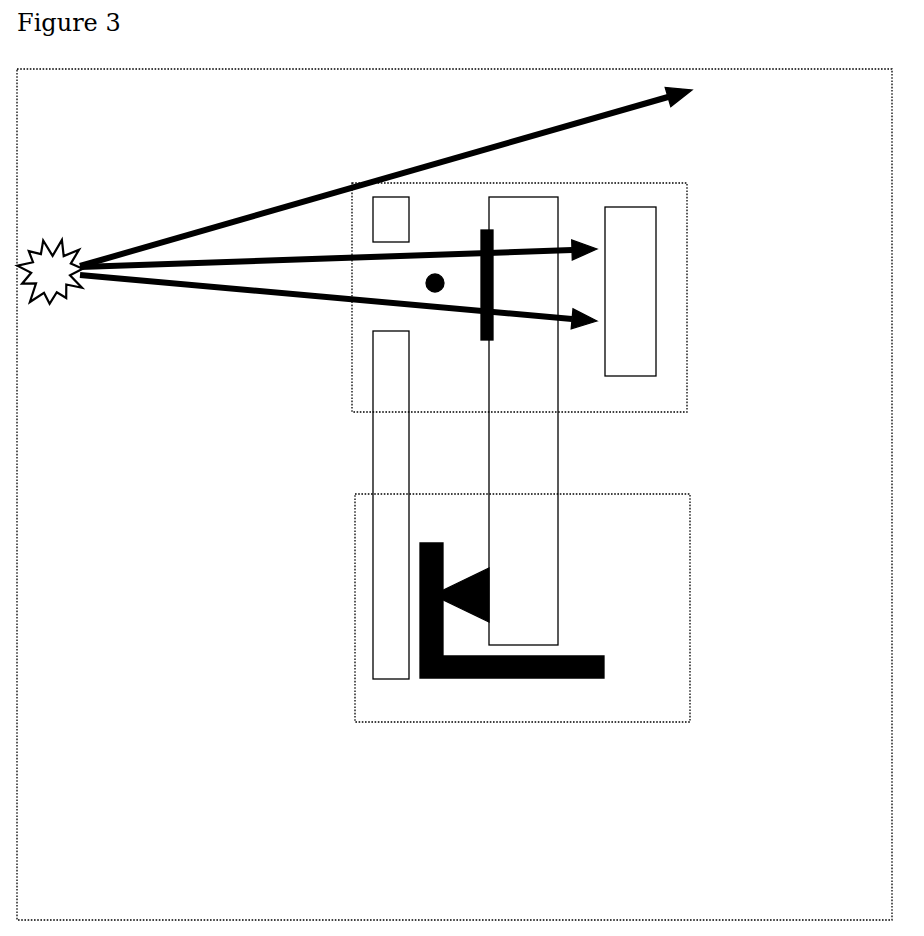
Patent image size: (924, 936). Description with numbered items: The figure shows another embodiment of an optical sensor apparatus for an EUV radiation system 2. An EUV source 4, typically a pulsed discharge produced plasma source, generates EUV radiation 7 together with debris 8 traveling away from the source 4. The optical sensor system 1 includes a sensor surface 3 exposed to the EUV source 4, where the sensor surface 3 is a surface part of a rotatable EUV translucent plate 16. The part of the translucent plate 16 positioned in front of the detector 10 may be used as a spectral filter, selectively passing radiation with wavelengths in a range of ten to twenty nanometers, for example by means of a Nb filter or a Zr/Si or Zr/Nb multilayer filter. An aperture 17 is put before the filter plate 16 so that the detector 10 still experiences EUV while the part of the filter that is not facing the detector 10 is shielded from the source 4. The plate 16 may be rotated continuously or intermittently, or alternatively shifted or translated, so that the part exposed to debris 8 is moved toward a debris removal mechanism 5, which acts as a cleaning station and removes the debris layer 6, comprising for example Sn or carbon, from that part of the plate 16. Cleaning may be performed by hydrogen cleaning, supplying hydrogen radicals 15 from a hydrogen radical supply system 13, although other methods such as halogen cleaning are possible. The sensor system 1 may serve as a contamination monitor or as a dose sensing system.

The optical sensor system 1 is at (678, 214).
The EUV radiation system 2 is at (828, 901).
The sensor surface 3 is at (460, 298).
The EUV source 4 is at (41, 343).
The removal mechanism 5 is at (666, 535).
The debris layer 6 is at (493, 248).
The EUV radiation 7 is at (386, 207).
The debris 8 is at (434, 275).
The detector 10 is at (637, 327).
The hydrogen radical supply system 13 is at (485, 670).
The hydrogen radicals 15 is at (460, 597).
The EUV translucent plate 16 is at (540, 463).
The aperture 17 is at (375, 292).